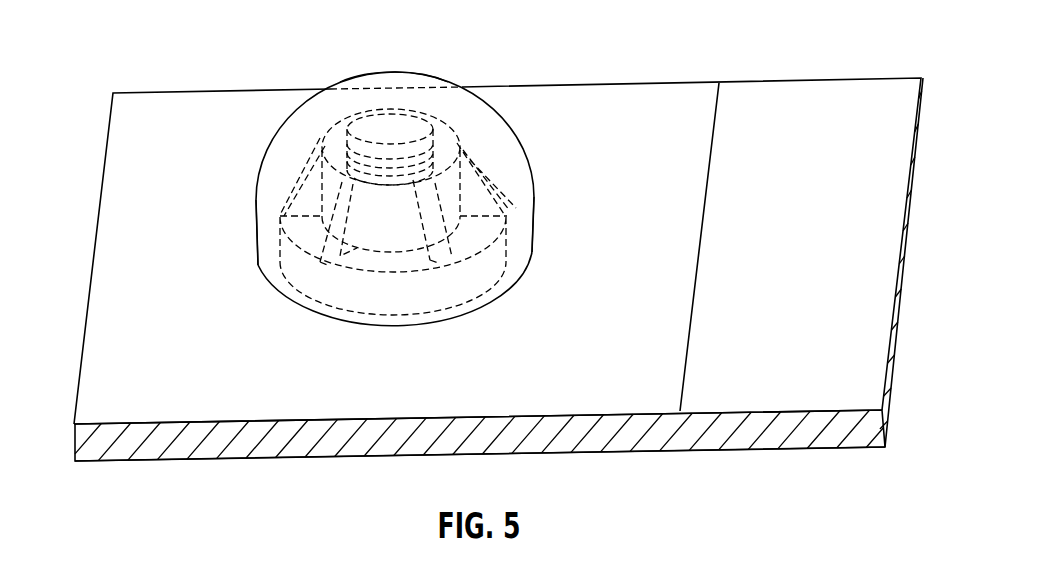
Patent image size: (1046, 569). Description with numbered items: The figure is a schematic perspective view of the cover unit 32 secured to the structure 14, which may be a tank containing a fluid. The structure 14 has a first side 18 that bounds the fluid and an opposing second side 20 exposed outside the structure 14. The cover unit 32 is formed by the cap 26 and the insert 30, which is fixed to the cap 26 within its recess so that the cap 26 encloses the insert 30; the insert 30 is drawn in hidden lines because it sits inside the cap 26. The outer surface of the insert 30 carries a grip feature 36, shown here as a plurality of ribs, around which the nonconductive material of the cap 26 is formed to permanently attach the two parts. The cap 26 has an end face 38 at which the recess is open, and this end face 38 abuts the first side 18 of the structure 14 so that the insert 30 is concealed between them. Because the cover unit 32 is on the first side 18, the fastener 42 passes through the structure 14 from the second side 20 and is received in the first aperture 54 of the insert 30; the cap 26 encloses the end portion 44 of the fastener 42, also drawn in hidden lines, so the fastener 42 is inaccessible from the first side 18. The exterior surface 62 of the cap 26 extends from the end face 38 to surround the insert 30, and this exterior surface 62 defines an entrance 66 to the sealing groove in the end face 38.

The structure 14 is at (807, 437).
The first side 18 is at (96, 314).
The second side 20 is at (127, 461).
The cap 26 is at (464, 89).
The insert 30 is at (505, 214).
The cover unit 32 is at (310, 66).
The grip feature 36 is at (293, 177).
The end face 38 is at (407, 329).
The fastener 42 is at (405, 100).
The end portion 44 is at (390, 128).
The first aperture 54 is at (420, 136).
The exterior surface 62 is at (358, 72).
The entrance 66 is at (258, 266).